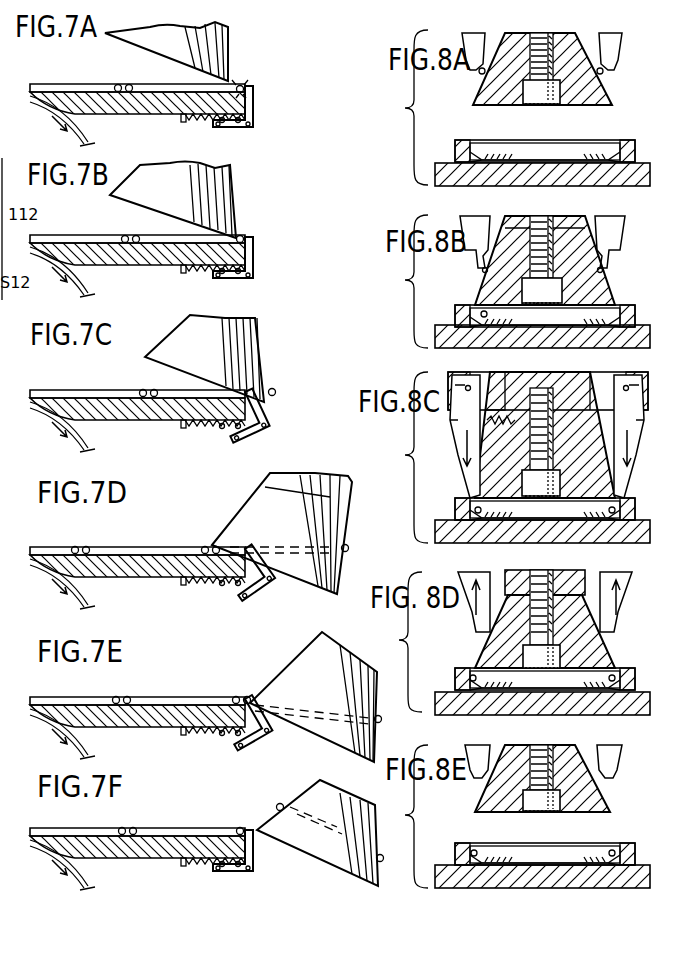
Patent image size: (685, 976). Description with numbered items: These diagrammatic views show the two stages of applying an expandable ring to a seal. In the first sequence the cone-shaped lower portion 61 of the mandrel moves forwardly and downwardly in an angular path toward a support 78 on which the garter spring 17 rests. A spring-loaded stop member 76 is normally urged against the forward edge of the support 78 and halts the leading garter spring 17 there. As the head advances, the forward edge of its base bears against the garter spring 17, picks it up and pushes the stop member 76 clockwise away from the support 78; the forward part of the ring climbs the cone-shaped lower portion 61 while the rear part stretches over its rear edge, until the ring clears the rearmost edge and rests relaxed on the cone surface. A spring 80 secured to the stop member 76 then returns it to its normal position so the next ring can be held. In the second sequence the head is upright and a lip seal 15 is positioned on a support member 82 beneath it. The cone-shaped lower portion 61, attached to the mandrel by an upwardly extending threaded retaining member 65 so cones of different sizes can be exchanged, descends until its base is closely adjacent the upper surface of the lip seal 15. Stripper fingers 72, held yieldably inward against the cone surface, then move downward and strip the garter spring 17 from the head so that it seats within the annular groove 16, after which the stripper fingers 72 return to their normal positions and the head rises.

In FIG. 8A, the lip seal 15 is at (455, 150).
In FIG. 8B, the lip seal 15 is at (462, 312).
In FIG. 8C, the lip seal 15 is at (458, 505).
In FIG. 8D, the lip seal 15 is at (455, 686).
In FIG. 8E, the lip seal 15 is at (458, 850).
In FIG. 8A, the annular groove 16 is at (468, 142).
In FIG. 8B, the annular groove 16 is at (474, 302).
In FIG. 8C, the annular groove 16 is at (466, 498).
In FIG. 8D, the annular groove 16 is at (455, 670).
In FIG. 8E, the annular groove 16 is at (468, 843).
In FIG. 7A, the garter spring 17 is at (124, 84).
In FIG. 7B, the garter spring 17 is at (128, 234).
In FIG. 7C, the garter spring 17 is at (185, 388).
In FIG. 7D, the garter spring 17 is at (349, 547).
In FIG. 7E, the garter spring 17 is at (178, 693).
In FIG. 7F, the garter spring 17 is at (167, 826).
In FIG. 8A, the garter spring 17 is at (478, 73).
In FIG. 8B, the garter spring 17 is at (483, 306).
In FIG. 8C, the garter spring 17 is at (480, 513).
In FIG. 8D, the garter spring 17 is at (470, 668).
In FIG. 8E, the garter spring 17 is at (486, 848).
In FIG. 7A, the cone-shaped lower portion 61 is at (224, 48).
In FIG. 7B, the cone-shaped lower portion 61 is at (233, 204).
In FIG. 7C, the cone-shaped lower portion 61 is at (265, 360).
In FIG. 7D, the cone-shaped lower portion 61 is at (240, 521).
In FIG. 7E, the cone-shaped lower portion 61 is at (292, 678).
In FIG. 7F, the cone-shaped lower portion 61 is at (265, 822).
In FIG. 8A, the cone-shaped lower portion 61 is at (605, 97).
In FIG. 8B, the cone-shaped lower portion 61 is at (545, 260).
In FIG. 8C, the cone-shaped lower portion 61 is at (548, 435).
In FIG. 8D, the cone-shaped lower portion 61 is at (545, 619).
In FIG. 8E, the cone-shaped lower portion 61 is at (605, 797).
In FIG. 8A, the threaded retaining member 65 is at (553, 104).
In FIG. 8B, the threaded retaining member 65 is at (556, 298).
In FIG. 8C, the threaded retaining member 65 is at (618, 507).
In FIG. 8D, the threaded retaining member 65 is at (548, 672).
In FIG. 8E, the threaded retaining member 65 is at (550, 812).
In FIG. 8A, the stripper finger 72 is at (612, 50).
In FIG. 8B, the stripper finger 72 is at (614, 258).
In FIG. 8C, the stripper finger 72 is at (634, 470).
In FIG. 8D, the stripper finger 72 is at (612, 622).
In FIG. 8E, the stripper finger 72 is at (616, 756).
In FIG. 7A, the spring-loaded stop member 76 is at (255, 103).
In FIG. 7B, the spring-loaded stop member 76 is at (255, 254).
In FIG. 7C, the spring-loaded stop member 76 is at (278, 422).
In FIG. 7D, the spring-loaded stop member 76 is at (272, 587).
In FIG. 7E, the spring-loaded stop member 76 is at (267, 755).
In FIG. 7F, the spring-loaded stop member 76 is at (256, 858).
In FIG. 7A, the support 78 is at (148, 116).
In FIG. 7B, the support 78 is at (144, 270).
In FIG. 7C, the support 78 is at (143, 418).
In FIG. 7D, the support 78 is at (141, 577).
In FIG. 7E, the support 78 is at (144, 728).
In FIG. 7F, the support 78 is at (150, 858).
In FIG. 7A, the spring 80 is at (203, 122).
In FIG. 7B, the spring 80 is at (205, 278).
In FIG. 7C, the spring 80 is at (208, 430).
In FIG. 7D, the spring 80 is at (199, 588).
In FIG. 7E, the spring 80 is at (201, 734).
In FIG. 7F, the spring 80 is at (199, 865).
In FIG. 8A, the support member 82 is at (643, 186).
In FIG. 8B, the support member 82 is at (640, 338).
In FIG. 8C, the support member 82 is at (625, 543).
In FIG. 8D, the support member 82 is at (632, 716).
In FIG. 8E, the support member 82 is at (645, 865).